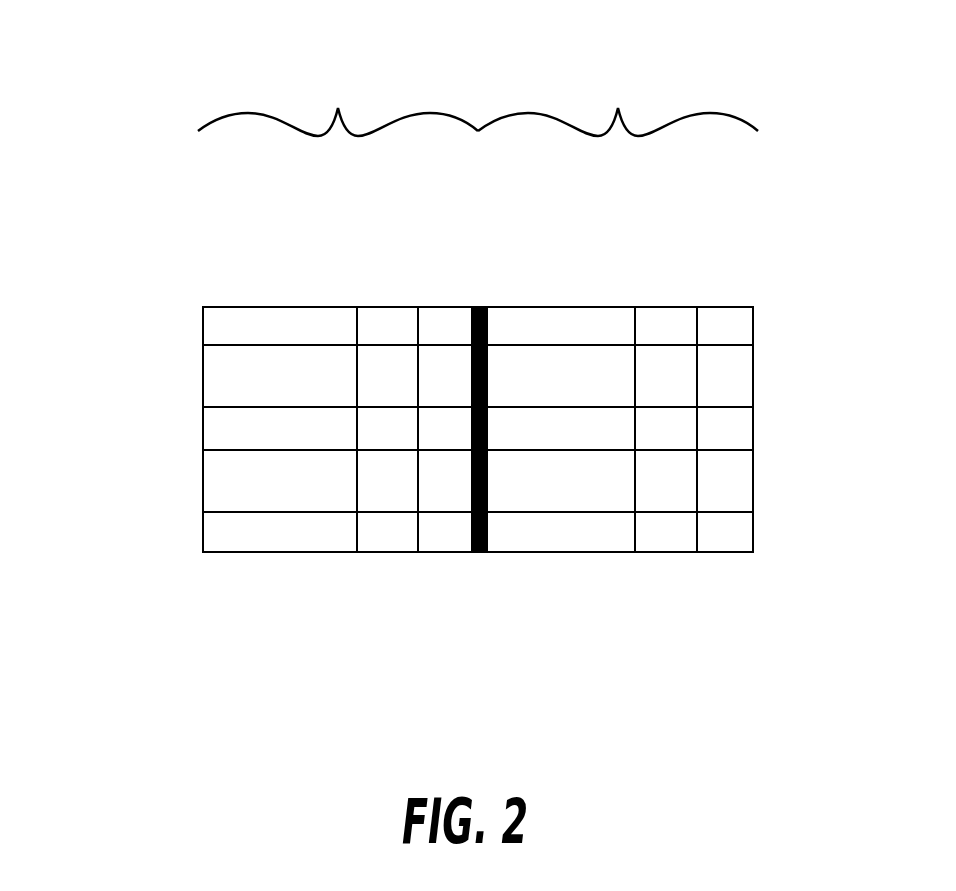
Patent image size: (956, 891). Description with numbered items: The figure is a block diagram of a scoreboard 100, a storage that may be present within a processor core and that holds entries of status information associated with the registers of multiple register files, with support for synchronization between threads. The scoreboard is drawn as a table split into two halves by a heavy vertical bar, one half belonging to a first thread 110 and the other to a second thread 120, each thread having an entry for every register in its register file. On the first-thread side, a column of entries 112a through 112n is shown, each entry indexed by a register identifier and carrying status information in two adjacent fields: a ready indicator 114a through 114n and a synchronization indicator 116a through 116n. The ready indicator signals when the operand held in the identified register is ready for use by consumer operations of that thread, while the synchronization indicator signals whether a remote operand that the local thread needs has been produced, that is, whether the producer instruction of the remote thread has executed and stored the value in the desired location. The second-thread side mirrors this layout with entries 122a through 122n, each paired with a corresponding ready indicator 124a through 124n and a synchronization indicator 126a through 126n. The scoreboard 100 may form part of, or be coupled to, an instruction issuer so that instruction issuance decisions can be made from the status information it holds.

The scoreboard 100 is at (120, 88).
The first thread 110 is at (248, 112).
The second thread 120 is at (710, 112).
The entry 112a is at (223, 322).
The entry 112n is at (223, 537).
The ready indicator 114a is at (375, 322).
The ready indicator 114n is at (375, 537).
The synchronization indicator 116a is at (453, 317).
The synchronization indicator 116n is at (453, 537).
The entry 122a is at (500, 322).
The entry 122n is at (552, 540).
The ready indicator 124a is at (672, 322).
The ready indicator 124n is at (665, 540).
The synchronization indicator 126a is at (728, 322).
The synchronization indicator 126n is at (725, 540).